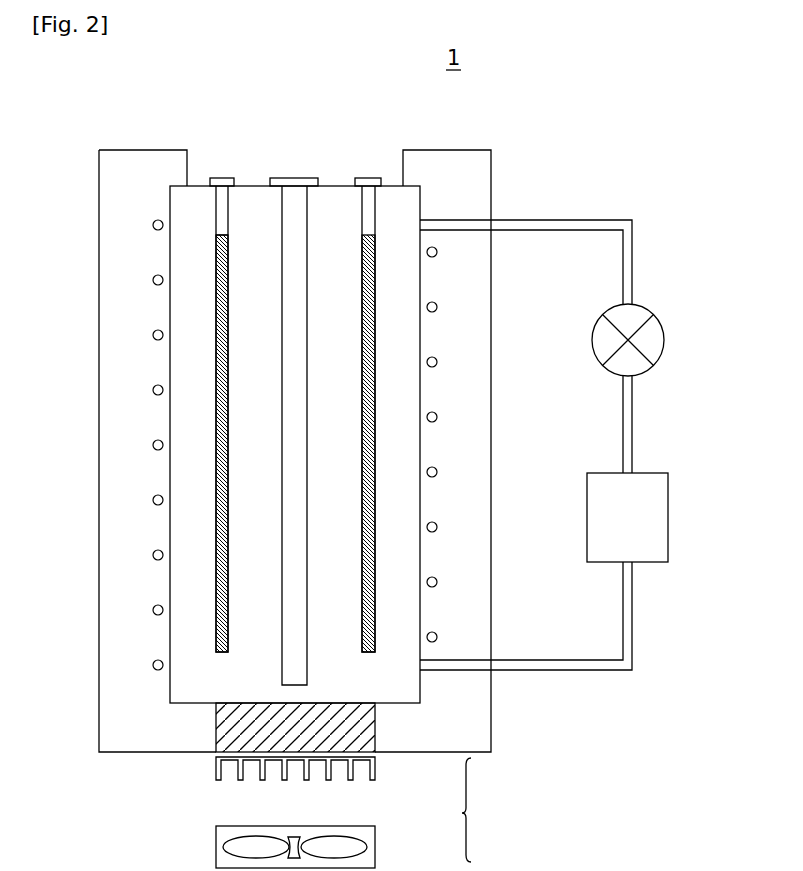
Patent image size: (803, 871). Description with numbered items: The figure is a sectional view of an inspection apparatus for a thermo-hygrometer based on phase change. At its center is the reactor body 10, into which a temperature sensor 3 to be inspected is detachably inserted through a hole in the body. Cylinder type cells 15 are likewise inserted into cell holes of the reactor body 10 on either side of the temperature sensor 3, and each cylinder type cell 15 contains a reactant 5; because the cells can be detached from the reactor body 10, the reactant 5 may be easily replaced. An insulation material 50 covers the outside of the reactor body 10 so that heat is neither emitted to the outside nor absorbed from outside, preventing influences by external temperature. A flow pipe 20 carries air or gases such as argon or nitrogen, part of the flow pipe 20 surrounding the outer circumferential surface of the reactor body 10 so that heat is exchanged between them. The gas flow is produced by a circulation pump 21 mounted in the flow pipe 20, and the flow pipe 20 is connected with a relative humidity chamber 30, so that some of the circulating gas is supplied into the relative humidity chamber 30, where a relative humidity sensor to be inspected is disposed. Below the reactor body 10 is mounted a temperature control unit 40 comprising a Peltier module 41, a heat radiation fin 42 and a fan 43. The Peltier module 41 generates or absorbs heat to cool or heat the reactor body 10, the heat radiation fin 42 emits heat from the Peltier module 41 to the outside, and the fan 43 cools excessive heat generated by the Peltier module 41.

The temperature sensor 3 is at (286, 208).
The reactant 5 is at (217, 352).
The reactor body 10 is at (187, 473).
The cylinder type cell 15 is at (218, 208).
The flow pipe 20 is at (552, 225).
The circulation pump 21 is at (665, 340).
The relative humidity chamber 30 is at (668, 518).
The temperature control unit 40 is at (481, 810).
The Peltier module 41 is at (370, 730).
The heat radiation fin 42 is at (373, 771).
The fan 43 is at (362, 845).
The insulation material 50 is at (135, 153).